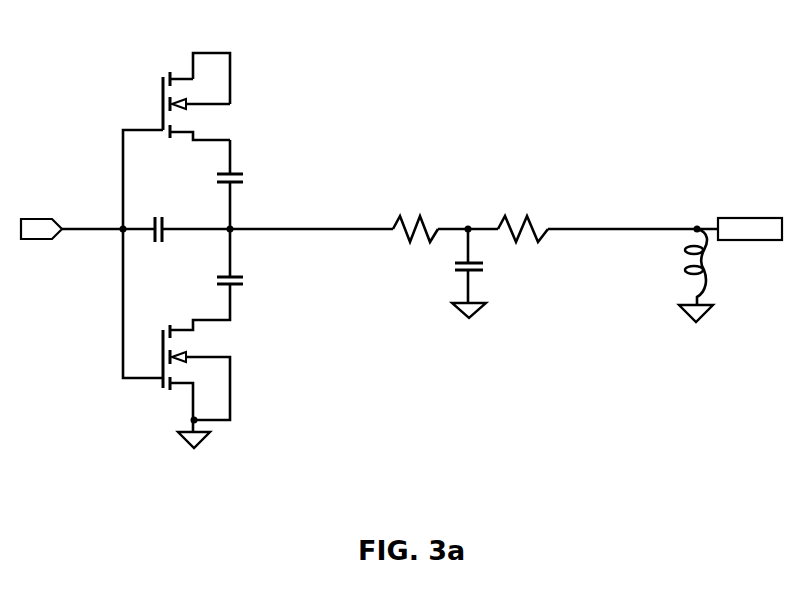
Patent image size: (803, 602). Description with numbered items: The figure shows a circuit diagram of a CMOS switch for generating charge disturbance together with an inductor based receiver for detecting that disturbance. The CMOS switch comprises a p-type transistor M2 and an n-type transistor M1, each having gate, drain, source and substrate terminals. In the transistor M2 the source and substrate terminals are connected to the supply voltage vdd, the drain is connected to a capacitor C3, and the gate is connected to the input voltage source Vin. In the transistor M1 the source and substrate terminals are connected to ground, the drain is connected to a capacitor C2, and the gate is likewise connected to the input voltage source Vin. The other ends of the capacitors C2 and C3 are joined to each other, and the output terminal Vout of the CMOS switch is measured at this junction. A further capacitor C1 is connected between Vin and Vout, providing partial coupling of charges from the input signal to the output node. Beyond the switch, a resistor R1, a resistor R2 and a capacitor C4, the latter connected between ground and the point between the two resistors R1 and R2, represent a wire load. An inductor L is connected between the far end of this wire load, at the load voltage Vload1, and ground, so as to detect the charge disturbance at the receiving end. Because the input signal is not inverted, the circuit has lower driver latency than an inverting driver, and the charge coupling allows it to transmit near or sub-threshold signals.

The PMOS transistor M2 is at (223, 106).
The NMOS transistor M1 is at (226, 386).
The capacitor C1 is at (160, 220).
The capacitor C2 is at (224, 268).
The capacitor C3 is at (224, 167).
The capacitor C4 is at (474, 272).
The resistor R1 is at (415, 220).
The resistor R2 is at (523, 220).
The inductor L is at (699, 274).
The input voltage source Vin is at (41, 229).
The output terminal Vout is at (278, 220).
The load voltage Vload1 is at (750, 229).
The supply voltage vdd is at (205, 68).